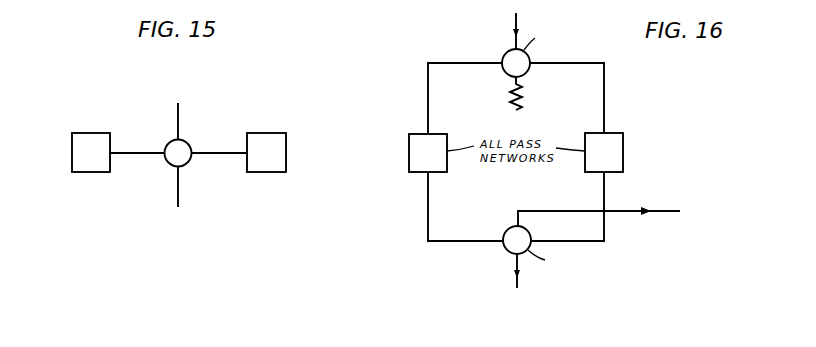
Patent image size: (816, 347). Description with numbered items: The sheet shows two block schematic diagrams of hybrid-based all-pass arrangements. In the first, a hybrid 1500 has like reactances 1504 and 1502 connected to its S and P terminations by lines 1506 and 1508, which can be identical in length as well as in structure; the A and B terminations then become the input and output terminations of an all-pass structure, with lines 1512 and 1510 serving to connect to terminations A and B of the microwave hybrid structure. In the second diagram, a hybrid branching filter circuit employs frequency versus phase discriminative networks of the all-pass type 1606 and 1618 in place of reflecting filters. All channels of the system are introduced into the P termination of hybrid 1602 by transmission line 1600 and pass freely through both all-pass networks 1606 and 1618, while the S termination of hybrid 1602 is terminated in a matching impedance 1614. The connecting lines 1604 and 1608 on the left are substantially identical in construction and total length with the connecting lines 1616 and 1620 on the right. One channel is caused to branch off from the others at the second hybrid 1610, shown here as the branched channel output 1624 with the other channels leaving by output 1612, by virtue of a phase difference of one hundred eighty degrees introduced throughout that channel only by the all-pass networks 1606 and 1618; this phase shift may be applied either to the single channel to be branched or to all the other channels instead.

In FIG. 15, the hybrid 1500 is at (167, 165).
In FIG. 15, the like reactance 1502 is at (259, 172).
In FIG. 15, the like reactance 1504 is at (88, 172).
In FIG. 15, the line 1506 is at (122, 148).
In FIG. 15, the line 1508 is at (228, 148).
In FIG. 15, the line 1510 is at (180, 197).
In FIG. 15, the line 1512 is at (180, 110).
In FIG. 16, the transmission line 1600 is at (513, 30).
In FIG. 16, the hybrid 1602 is at (527, 72).
In FIG. 16, the connecting line 1604 is at (428, 85).
In FIG. 16, the all-pass network 1606 is at (409, 153).
In FIG. 16, the connecting line 1608 is at (428, 218).
In FIG. 16, the second hybrid 1610 is at (503, 250).
In FIG. 16, the other channels output 1612 is at (520, 287).
In FIG. 16, the matching impedance 1614 is at (525, 100).
In FIG. 16, the connecting line 1616 is at (606, 236).
In FIG. 16, the all-pass network 1618 is at (623, 146).
In FIG. 16, the connecting line 1620 is at (606, 90).
In FIG. 16, the branched channel output 1624 is at (622, 211).